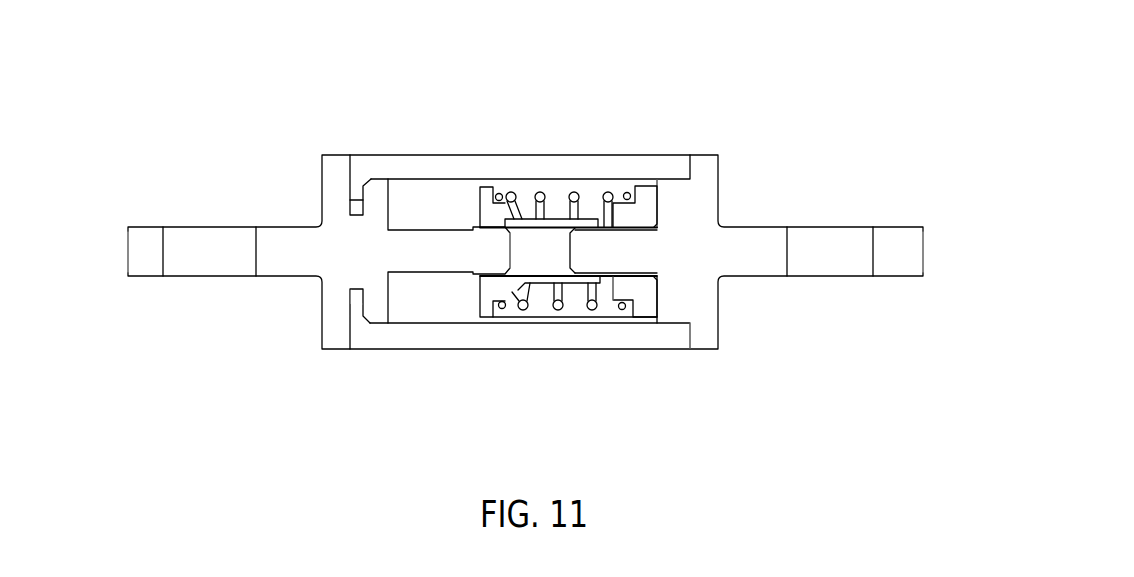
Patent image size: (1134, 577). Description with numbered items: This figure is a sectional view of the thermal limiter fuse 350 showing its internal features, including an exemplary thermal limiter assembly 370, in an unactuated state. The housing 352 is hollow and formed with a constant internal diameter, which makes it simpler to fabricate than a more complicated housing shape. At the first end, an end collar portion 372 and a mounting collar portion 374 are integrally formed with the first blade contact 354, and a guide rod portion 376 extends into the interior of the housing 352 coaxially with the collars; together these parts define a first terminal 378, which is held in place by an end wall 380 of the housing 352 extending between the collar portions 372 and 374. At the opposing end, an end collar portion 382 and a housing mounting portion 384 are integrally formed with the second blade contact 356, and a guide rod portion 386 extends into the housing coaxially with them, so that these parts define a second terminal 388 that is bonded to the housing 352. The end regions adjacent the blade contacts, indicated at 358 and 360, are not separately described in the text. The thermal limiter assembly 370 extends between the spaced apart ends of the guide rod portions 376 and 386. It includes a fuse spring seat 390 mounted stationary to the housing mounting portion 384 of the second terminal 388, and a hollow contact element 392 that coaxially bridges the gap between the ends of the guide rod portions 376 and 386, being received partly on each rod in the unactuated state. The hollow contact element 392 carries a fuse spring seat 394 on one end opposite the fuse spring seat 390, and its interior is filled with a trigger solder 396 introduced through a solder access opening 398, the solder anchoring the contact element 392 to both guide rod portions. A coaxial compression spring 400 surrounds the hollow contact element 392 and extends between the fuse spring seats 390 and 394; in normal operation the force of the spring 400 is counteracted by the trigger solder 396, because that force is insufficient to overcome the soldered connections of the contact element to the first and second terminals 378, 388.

The thermal limiter fuse 350 is at (689, 73).
The housing 352 is at (644, 145).
The first blade contact 354 is at (147, 279).
The second blade contact 356 is at (903, 263).
The first tube section 358 is at (236, 279).
The second tube section 360 is at (818, 279).
The thermal limiter assembly 370 is at (600, 316).
The end collar portion 372 is at (333, 338).
The mounting collar portion 374 is at (378, 309).
The guide rod portion 376 is at (425, 243).
The first terminal 378 is at (118, 246).
The end wall 380 is at (353, 310).
The end collar portion 382 is at (705, 338).
The housing mounting portion 384 is at (668, 188).
The guide rod portion 386 is at (625, 248).
The second terminal 388 is at (934, 245).
The fuse spring seat 390 is at (652, 294).
The hollow contact element 392 is at (513, 217).
The fuse spring seat 394 is at (487, 309).
The trigger solder 396 is at (526, 248).
The solder access opening 398 is at (553, 205).
The coaxial compression spring 400 is at (557, 309).